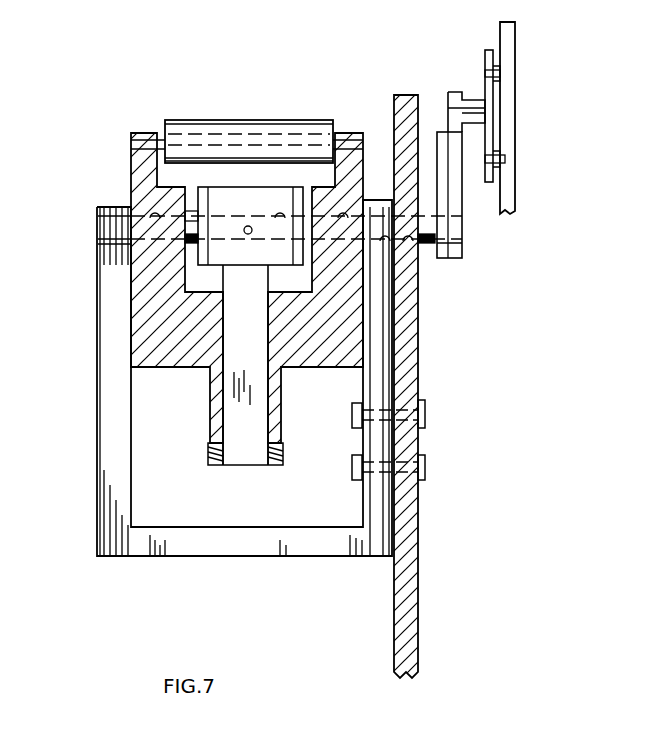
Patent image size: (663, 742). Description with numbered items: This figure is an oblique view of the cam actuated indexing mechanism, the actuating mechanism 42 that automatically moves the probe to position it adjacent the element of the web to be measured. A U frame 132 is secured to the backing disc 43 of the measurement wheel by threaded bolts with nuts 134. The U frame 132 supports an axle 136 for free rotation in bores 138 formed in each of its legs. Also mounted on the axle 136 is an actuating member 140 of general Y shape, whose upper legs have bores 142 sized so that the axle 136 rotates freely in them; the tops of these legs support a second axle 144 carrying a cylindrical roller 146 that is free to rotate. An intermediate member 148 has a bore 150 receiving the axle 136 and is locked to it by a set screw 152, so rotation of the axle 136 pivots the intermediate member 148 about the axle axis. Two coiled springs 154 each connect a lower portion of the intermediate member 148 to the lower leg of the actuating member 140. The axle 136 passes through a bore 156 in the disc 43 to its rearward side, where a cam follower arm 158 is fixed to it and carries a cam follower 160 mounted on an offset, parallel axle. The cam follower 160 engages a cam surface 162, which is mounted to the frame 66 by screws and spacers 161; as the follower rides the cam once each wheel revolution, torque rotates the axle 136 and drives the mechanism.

The actuating mechanism 42 is at (92, 322).
The backing disc 43 is at (417, 540).
The frame 66 is at (512, 46).
The U frame 132 is at (106, 426).
The threaded bolts with nuts 134 is at (426, 410).
The axle 136 is at (100, 240).
The bores 138 is at (100, 217).
The actuating member 140 is at (196, 361).
The bores 142 is at (158, 213).
The axle 144 is at (208, 136).
The cylindrical roller 146 is at (276, 137).
The intermediate member 148 is at (268, 356).
The bore 150 is at (281, 214).
The set screw 152 is at (250, 226).
The coiled springs 154 is at (212, 445).
The bore 156 is at (415, 250).
The cam follower arm 158 is at (445, 140).
The cam follower 160 is at (470, 72).
The screws and spacers 161 is at (500, 73).
The cam surface 162 is at (489, 62).